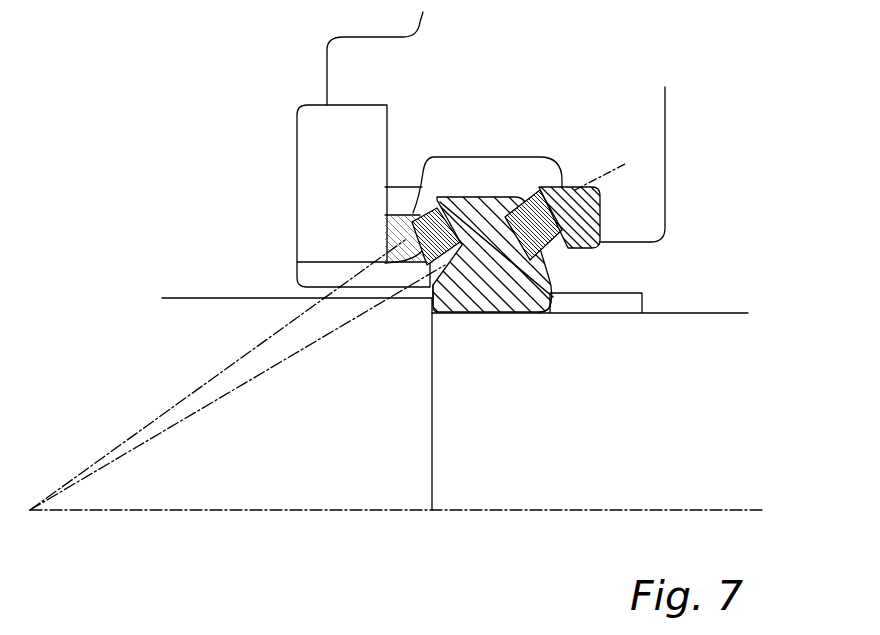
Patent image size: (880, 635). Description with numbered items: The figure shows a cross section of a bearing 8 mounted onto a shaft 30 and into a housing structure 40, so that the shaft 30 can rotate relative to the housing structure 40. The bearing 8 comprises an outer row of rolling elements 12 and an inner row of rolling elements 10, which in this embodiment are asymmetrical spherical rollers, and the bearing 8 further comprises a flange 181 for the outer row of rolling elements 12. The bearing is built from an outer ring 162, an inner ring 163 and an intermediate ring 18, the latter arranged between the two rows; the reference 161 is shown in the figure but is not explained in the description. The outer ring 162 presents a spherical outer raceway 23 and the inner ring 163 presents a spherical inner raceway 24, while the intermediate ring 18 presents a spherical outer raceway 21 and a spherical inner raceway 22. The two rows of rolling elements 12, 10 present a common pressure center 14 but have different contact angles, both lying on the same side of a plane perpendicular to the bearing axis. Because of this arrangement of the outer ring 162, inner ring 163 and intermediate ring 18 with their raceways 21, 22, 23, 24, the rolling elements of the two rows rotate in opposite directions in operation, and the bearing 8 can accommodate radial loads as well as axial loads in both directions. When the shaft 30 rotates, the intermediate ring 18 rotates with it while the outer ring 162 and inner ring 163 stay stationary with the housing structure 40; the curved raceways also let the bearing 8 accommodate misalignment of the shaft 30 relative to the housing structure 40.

The bearing 8 is at (561, 137).
The inner row of rolling elements 10 is at (433, 157).
The outer row of rolling elements 12 is at (560, 250).
The common pressure center 14 is at (30, 510).
The intermediate ring 18 is at (508, 313).
The spherical outer raceway 21 is at (556, 258).
The spherical inner raceway 22 is at (435, 275).
The spherical outer raceway 23 is at (548, 196).
The spherical inner raceway 24 is at (307, 260).
The shaft 30 is at (742, 400).
The housing structure 40 is at (343, 146).
The sealing lip 161 is at (387, 200).
The outer ring 162 is at (602, 213).
The inner ring 163 is at (387, 240).
The flange 181 is at (502, 197).